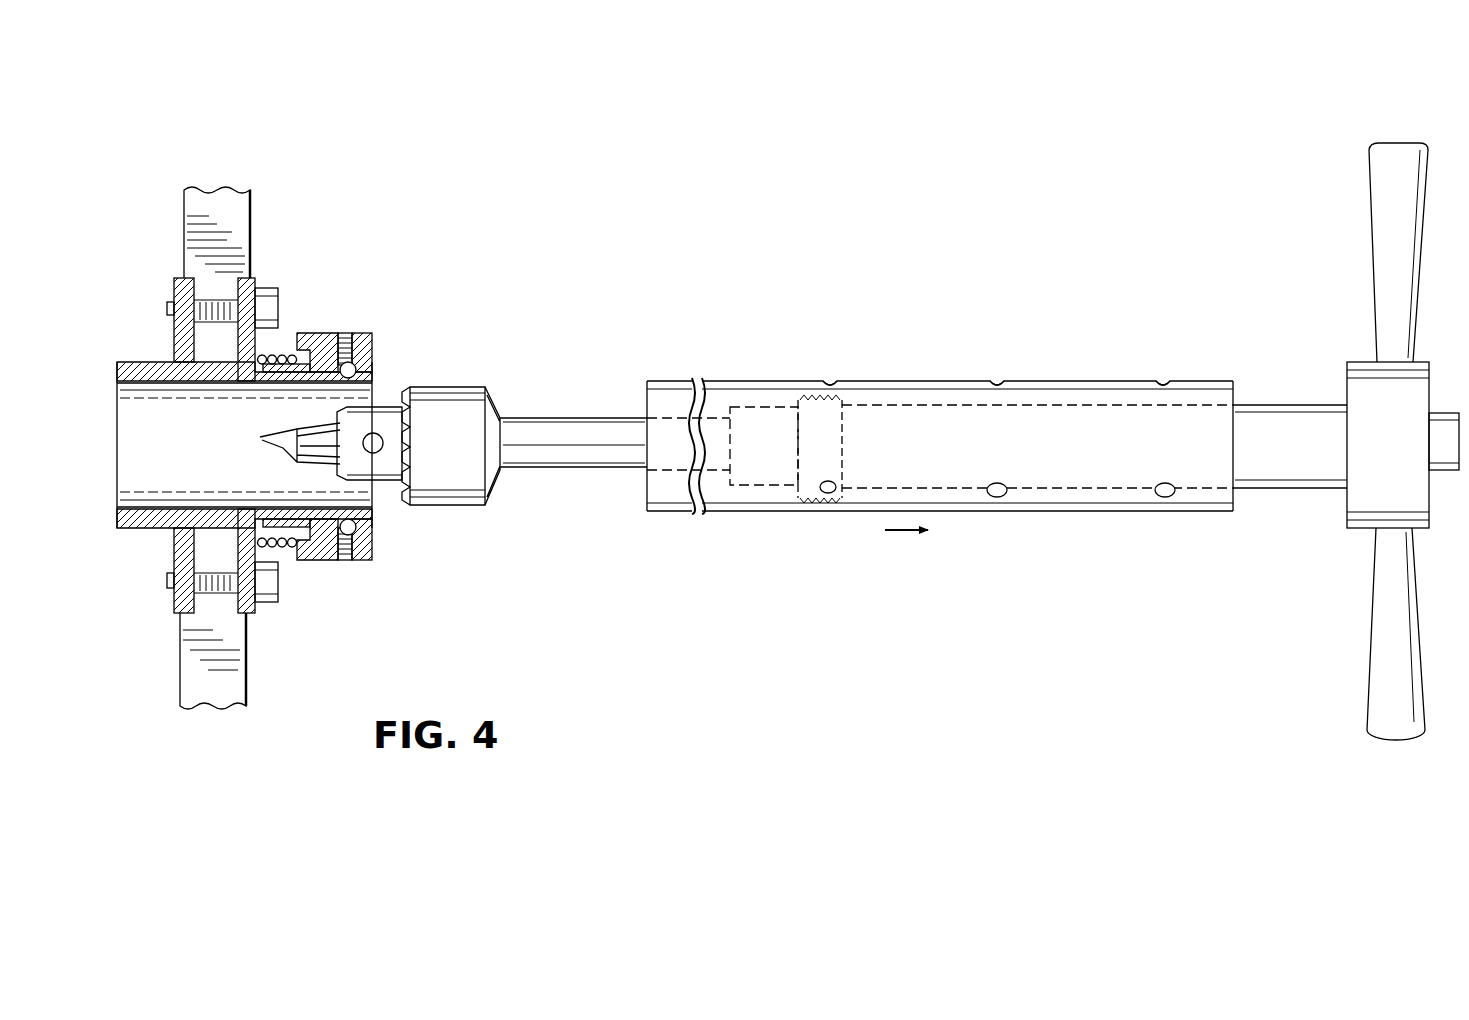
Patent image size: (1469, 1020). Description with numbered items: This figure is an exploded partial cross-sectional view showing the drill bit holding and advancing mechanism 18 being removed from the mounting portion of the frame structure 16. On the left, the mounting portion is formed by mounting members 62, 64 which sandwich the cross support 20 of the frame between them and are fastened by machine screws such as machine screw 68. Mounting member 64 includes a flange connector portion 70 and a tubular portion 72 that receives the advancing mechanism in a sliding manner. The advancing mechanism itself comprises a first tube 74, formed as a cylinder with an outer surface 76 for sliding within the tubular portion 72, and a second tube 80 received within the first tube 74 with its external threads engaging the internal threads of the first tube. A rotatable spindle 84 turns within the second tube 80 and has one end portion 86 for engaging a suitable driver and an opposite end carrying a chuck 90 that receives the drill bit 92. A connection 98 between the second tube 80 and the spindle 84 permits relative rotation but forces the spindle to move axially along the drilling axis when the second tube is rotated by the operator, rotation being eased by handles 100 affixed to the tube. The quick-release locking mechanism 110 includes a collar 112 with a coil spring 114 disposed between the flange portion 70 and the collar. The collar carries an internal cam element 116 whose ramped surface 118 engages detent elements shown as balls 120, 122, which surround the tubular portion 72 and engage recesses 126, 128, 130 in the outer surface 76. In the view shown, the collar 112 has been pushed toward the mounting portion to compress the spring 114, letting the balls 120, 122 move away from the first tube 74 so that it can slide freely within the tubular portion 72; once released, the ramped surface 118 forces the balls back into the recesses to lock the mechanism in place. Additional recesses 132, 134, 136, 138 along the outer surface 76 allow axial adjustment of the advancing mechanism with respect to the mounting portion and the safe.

The frame structure 16 is at (252, 195).
The drill bit holding and advancing mechanism 18 is at (940, 432).
The cross support 20 is at (234, 670).
The mounting member 62 is at (176, 282).
The mounting member 64 is at (257, 278).
The machine screw 68 is at (272, 604).
The flange connector portion 70 is at (258, 302).
The tubular portion 72 is at (180, 384).
The first tube 74 is at (1080, 512).
The outer surface 76 is at (1070, 458).
The second tube 80 is at (1300, 493).
The rotatable spindle 84 is at (582, 468).
The end portion 86 is at (1438, 433).
The chuck 90 is at (462, 508).
The drill bit 92 is at (268, 442).
The connection 98 is at (766, 410).
The handles 100 is at (1380, 263).
The quick-release locking mechanism 110 is at (360, 451).
The collar 112 is at (326, 333).
The coil spring 114 is at (281, 546).
The cam element 116 is at (362, 345).
The ramped surface 118 is at (334, 562).
The detent element 120 is at (356, 368).
The detent element 122 is at (370, 528).
The recess 126 is at (1000, 378).
The recess 128 is at (1022, 523).
The recess 130 is at (995, 499).
The recess 132 is at (830, 383).
The recess 134 is at (828, 496).
The recess 136 is at (1162, 380).
The recess 138 is at (1167, 498).